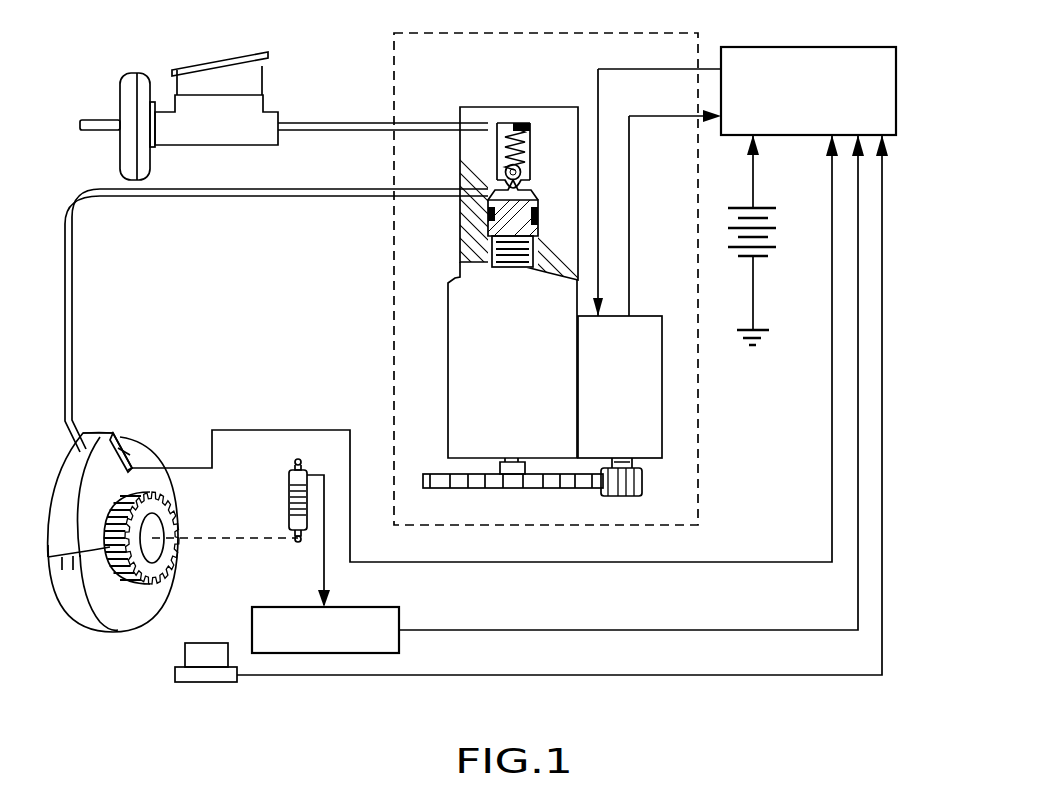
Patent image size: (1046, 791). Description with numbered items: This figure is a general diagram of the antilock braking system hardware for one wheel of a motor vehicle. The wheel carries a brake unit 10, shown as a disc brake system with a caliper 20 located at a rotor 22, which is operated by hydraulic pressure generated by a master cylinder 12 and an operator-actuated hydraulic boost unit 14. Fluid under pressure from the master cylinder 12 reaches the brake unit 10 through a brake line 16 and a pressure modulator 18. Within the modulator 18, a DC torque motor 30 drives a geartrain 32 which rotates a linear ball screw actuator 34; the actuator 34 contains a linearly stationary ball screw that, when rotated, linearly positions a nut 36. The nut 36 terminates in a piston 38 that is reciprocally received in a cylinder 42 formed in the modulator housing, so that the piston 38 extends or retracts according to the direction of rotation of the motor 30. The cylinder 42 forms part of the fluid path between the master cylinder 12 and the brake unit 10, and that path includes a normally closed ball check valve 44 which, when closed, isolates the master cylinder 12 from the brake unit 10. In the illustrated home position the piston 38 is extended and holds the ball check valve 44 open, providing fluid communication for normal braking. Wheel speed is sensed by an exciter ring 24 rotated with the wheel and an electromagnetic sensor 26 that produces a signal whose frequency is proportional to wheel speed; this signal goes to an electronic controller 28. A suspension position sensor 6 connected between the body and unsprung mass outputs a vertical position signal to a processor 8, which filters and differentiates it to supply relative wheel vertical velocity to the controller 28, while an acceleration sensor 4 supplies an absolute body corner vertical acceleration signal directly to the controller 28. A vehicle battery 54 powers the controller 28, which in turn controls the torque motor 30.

The acceleration sensor 4 is at (207, 673).
The suspension position sensor 6 is at (290, 508).
The processor 8 is at (383, 613).
The brake unit 10 is at (172, 448).
The master cylinder 12 is at (250, 123).
The hydraulic boost unit 14 is at (125, 110).
The brake line 16 is at (377, 193).
The pressure modulator 18 is at (393, 322).
The caliper 20 is at (102, 475).
The rotor 22 is at (120, 613).
The exciter ring 24 is at (173, 533).
The electromagnetic sensor 26 is at (133, 453).
The electronic controller 28 is at (813, 57).
The DC torque motor 30 is at (645, 340).
The geartrain 32 is at (452, 482).
The linear ball screw actuator 34 is at (470, 392).
The nut 36 is at (527, 255).
The piston 38 is at (500, 232).
The cylinder 42 is at (490, 182).
The ball check valve 44 is at (505, 172).
The vehicle battery 54 is at (775, 203).